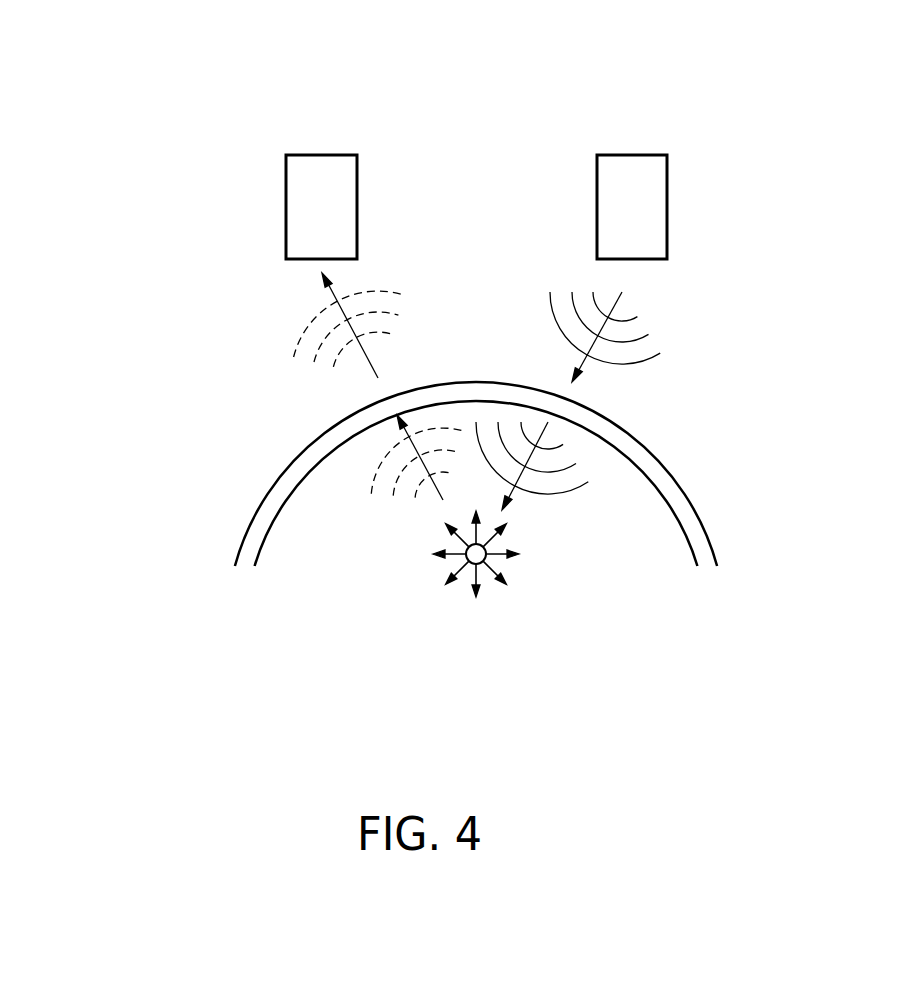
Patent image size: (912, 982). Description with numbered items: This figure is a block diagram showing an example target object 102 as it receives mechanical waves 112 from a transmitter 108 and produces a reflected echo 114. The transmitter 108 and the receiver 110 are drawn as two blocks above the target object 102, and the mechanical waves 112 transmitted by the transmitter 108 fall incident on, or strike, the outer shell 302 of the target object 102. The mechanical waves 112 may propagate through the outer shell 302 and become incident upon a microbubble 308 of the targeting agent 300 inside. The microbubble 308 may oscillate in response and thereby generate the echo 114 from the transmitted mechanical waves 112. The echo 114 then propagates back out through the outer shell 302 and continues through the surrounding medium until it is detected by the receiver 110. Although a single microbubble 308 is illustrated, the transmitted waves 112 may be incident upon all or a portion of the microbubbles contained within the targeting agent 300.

The target object 102 is at (88, 112).
The transmitter 108 is at (668, 177).
The receiver 110 is at (285, 212).
The mechanical waves 112 is at (598, 353).
The echo 114 is at (372, 360).
The targeting agent 300 is at (452, 474).
The outer shell 302 is at (702, 522).
The microbubble 308 is at (457, 560).